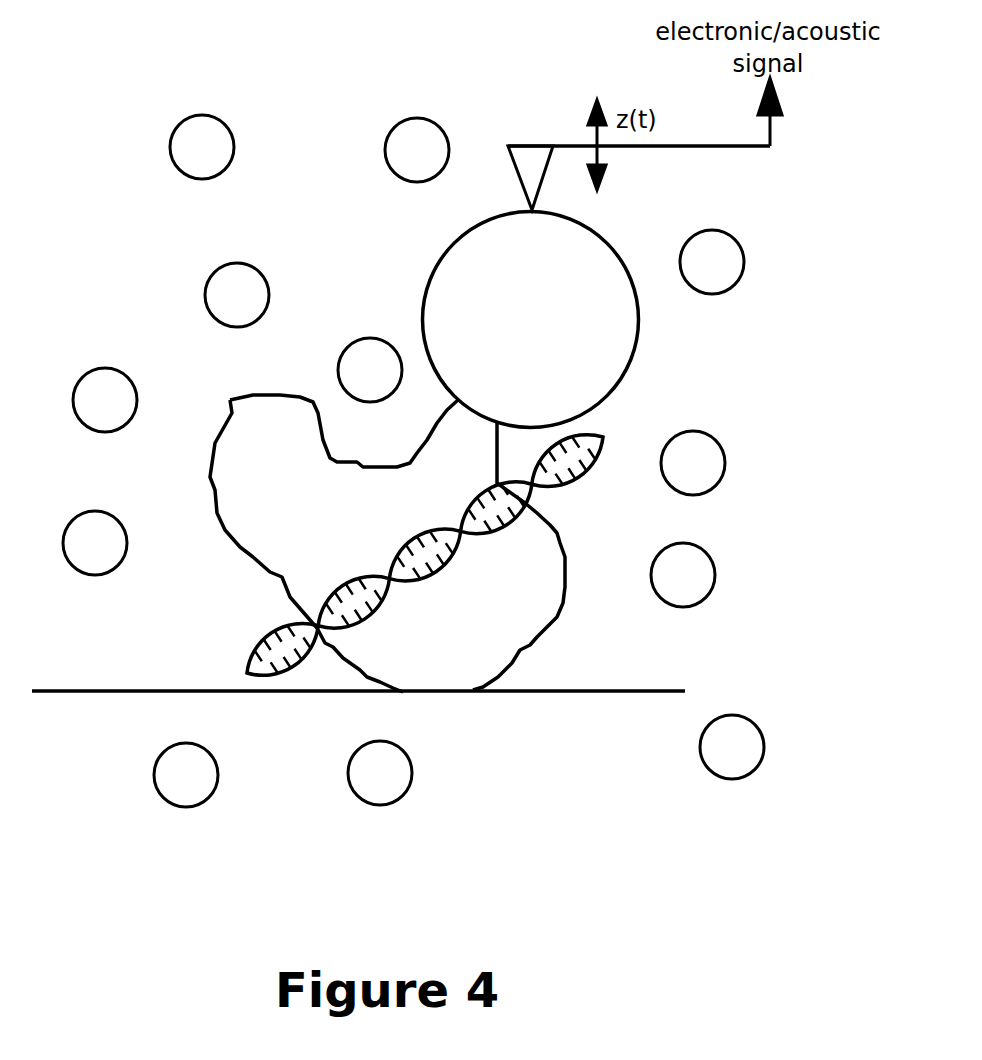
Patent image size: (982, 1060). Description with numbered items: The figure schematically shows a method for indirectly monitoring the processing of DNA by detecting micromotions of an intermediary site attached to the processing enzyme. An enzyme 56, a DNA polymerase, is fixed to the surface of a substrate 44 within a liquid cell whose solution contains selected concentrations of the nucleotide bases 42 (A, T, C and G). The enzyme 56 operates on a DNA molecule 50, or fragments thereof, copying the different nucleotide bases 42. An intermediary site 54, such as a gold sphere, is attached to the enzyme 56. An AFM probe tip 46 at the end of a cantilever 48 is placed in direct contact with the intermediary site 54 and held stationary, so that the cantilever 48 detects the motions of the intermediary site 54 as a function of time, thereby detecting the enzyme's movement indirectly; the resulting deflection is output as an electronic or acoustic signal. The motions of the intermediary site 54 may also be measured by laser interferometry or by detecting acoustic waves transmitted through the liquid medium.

The nucleotide bases 42 is at (167, 148).
The substrate 44 is at (118, 693).
The tip 46 is at (527, 155).
The cantilever 48 is at (700, 146).
The DNA molecule 50 is at (260, 643).
The intermediary site 54 is at (637, 342).
The enzyme 56 is at (530, 643).